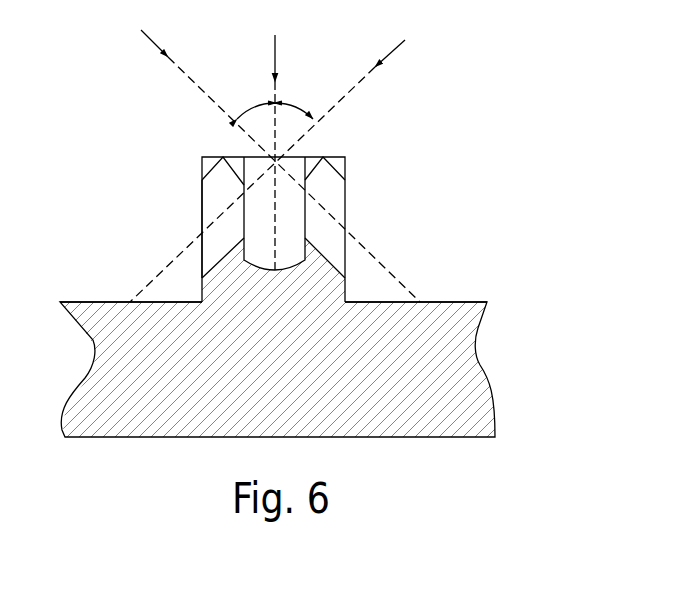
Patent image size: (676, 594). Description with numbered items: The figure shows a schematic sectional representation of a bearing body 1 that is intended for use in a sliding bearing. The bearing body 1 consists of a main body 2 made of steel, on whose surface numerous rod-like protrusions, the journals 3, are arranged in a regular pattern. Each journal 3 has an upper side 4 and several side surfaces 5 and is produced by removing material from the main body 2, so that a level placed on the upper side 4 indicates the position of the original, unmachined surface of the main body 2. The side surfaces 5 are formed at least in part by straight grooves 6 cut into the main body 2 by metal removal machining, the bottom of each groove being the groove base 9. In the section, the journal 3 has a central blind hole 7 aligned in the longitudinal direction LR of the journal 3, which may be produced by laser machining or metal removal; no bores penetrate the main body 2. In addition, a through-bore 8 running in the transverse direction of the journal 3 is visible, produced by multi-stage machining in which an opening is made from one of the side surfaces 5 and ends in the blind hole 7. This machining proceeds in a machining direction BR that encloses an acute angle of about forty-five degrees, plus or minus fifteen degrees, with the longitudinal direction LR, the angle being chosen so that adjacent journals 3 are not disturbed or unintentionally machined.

The bearing body 1 is at (503, 108).
The main body 2 is at (478, 365).
The journal 3 is at (202, 158).
The upper side 4 is at (338, 156).
The side surface 5 is at (345, 282).
The groove 6 is at (105, 295).
The blind hole 7 is at (294, 156).
The through-bore 8 is at (184, 201).
The groove base 9 is at (452, 301).
The machining direction BR is at (165, 58).
The longitudinal direction LR is at (273, 42).